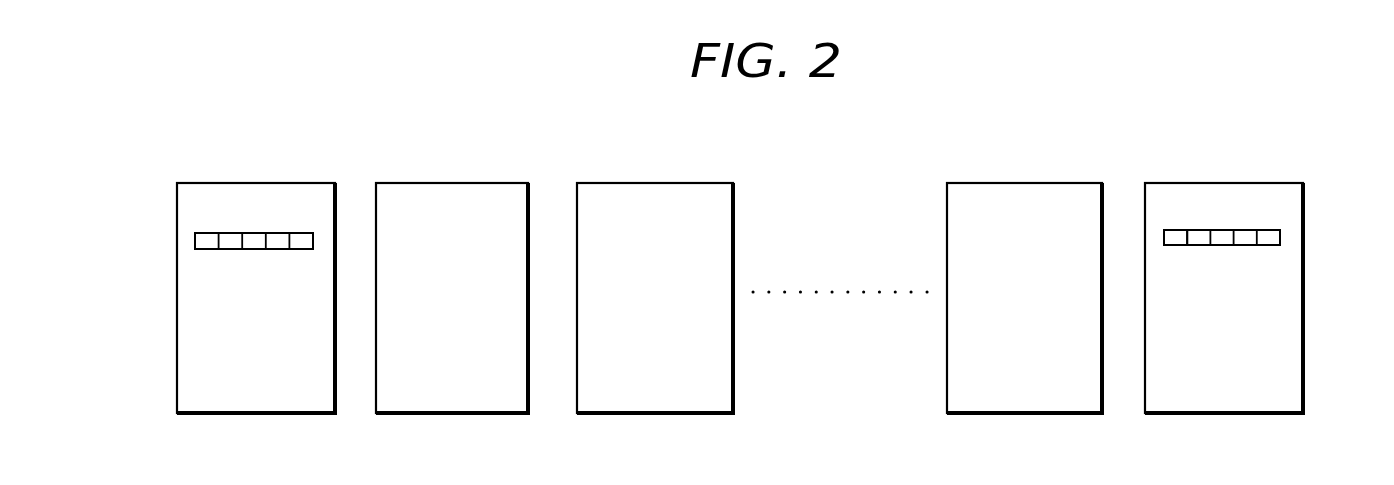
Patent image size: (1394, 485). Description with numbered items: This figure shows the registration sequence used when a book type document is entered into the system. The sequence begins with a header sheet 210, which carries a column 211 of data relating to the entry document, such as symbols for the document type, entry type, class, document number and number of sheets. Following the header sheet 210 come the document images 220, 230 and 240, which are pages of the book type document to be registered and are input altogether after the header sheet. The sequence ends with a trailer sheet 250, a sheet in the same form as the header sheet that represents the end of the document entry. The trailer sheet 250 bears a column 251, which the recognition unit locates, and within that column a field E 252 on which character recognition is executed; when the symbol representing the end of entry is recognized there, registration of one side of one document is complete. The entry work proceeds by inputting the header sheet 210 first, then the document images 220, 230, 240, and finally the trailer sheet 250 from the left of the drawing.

The header sheet 210 is at (212, 188).
The column 211 is at (270, 233).
The document image 220 is at (455, 189).
The document image 230 is at (642, 188).
The document image 240 is at (1017, 187).
The trailer sheet 250 is at (1202, 187).
The column 251 is at (1250, 233).
The field E 252 is at (1173, 233).